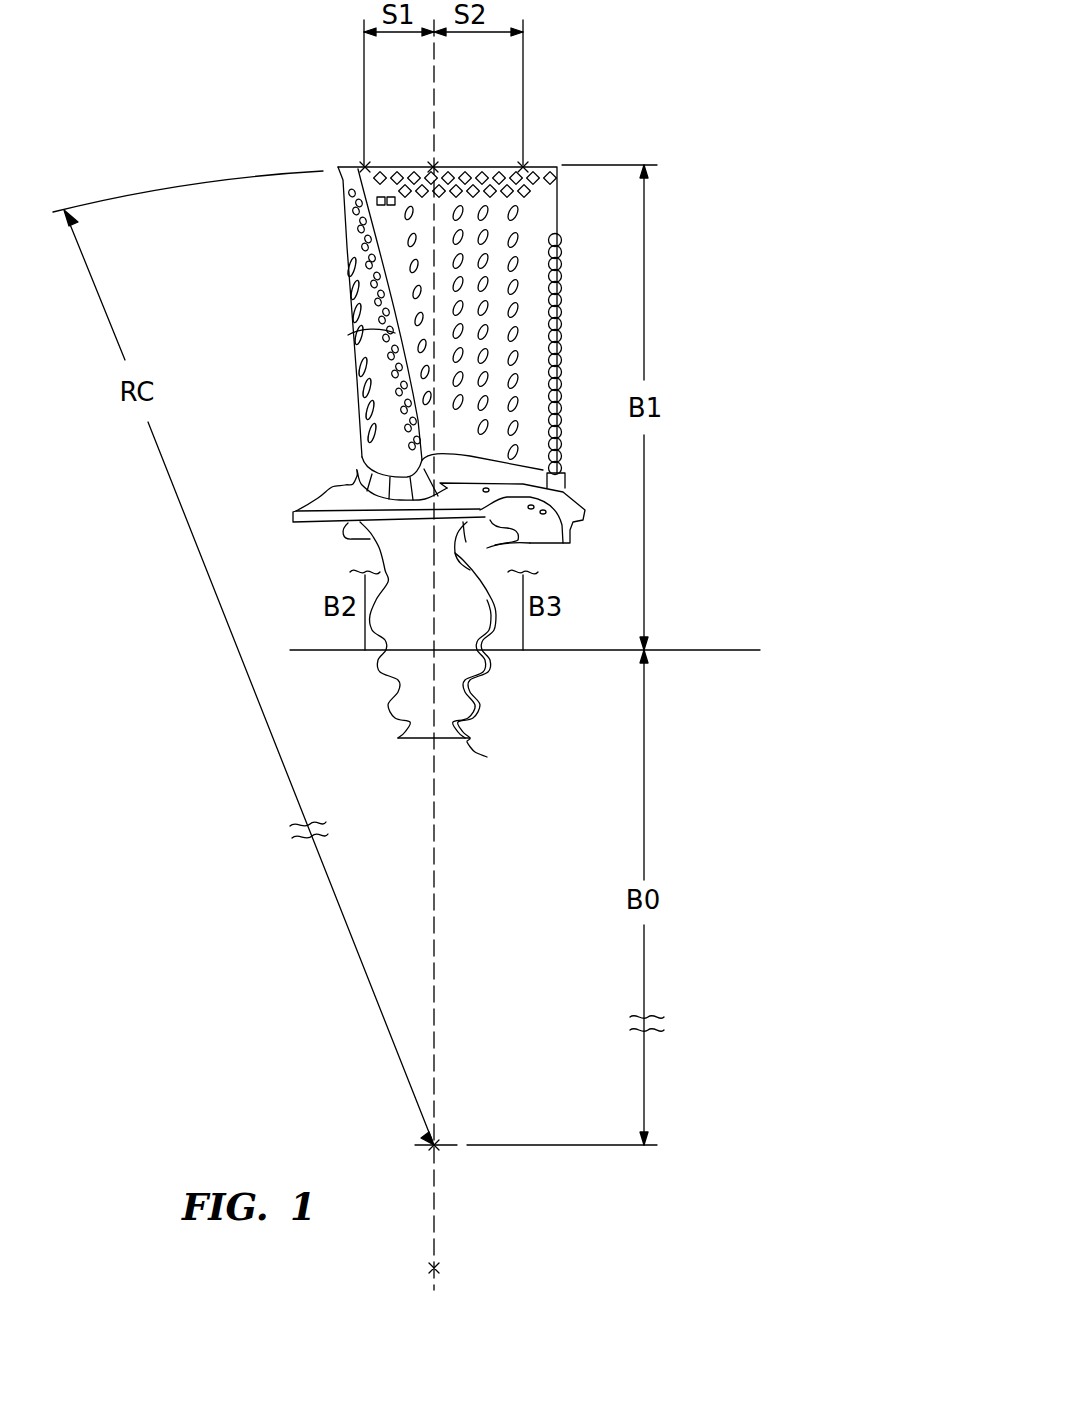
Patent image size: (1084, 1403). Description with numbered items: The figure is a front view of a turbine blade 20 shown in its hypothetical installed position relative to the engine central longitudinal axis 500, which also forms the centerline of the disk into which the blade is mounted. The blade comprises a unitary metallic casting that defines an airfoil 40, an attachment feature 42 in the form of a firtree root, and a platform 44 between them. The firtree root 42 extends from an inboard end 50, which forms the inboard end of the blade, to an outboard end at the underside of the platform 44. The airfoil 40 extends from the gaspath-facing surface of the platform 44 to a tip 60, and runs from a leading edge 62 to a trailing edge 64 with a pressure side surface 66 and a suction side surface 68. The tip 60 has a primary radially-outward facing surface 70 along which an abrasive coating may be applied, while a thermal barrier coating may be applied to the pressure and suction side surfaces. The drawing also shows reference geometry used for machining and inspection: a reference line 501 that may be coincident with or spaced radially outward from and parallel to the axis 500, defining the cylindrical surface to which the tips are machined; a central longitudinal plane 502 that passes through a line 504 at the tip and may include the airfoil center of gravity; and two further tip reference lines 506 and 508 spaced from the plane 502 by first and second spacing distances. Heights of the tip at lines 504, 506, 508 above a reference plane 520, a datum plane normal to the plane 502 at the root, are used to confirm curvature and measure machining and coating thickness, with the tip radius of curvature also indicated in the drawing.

The turbine blade 20 is at (678, 315).
The airfoil 40 is at (429, 282).
The attachment feature 42 is at (508, 692).
The platform 44 is at (326, 498).
The inboard end 50 is at (487, 757).
The tip 60 is at (458, 165).
The leading edge 62 is at (353, 345).
The trailing edge 64 is at (562, 335).
The pressure side surface 66 is at (510, 258).
The suction side surface 68 is at (357, 257).
The primary radially-outward facing surface 70 is at (477, 165).
The engine central longitudinal axis 500 is at (440, 1268).
The reference line 501 is at (415, 1147).
The central longitudinal plane 502 is at (437, 815).
The line at the tip 504 is at (433, 167).
The reference line 506 is at (365, 167).
The reference line 508 is at (523, 167).
The reference plane 520 is at (728, 650).